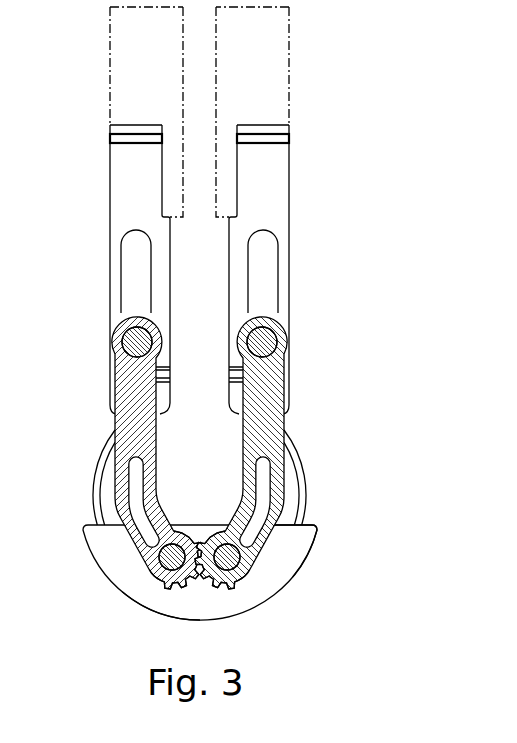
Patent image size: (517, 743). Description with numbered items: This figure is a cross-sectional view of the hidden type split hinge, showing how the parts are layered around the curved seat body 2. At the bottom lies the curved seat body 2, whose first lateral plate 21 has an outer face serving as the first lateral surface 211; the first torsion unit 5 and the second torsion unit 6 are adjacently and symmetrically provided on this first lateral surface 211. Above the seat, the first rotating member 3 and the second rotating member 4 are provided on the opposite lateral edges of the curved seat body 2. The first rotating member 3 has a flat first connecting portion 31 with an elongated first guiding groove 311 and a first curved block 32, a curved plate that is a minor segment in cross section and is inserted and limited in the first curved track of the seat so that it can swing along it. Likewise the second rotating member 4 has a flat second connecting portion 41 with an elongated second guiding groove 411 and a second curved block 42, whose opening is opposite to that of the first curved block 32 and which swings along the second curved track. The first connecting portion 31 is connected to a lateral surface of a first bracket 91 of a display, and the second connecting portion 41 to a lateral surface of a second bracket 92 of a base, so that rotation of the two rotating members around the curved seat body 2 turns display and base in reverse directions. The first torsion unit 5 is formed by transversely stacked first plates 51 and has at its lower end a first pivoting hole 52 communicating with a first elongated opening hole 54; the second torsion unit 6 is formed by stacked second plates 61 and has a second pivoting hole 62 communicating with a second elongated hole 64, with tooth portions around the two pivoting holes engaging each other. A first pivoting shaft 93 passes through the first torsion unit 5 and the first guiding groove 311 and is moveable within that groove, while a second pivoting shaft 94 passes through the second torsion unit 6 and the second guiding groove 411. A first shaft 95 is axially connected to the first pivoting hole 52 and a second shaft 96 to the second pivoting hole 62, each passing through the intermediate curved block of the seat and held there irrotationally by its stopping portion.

The curved seat body 2 is at (225, 620).
The first lateral plate 21 is at (152, 603).
The first lateral surface 211 is at (298, 545).
The first rotating member 3 is at (298, 170).
The first connecting portion 31 is at (275, 205).
The first guiding groove 311 is at (265, 268).
The first curved block 32 is at (298, 465).
The second rotating member 4 is at (100, 170).
The second connecting portion 41 is at (125, 205).
The second guiding groove 411 is at (133, 268).
The second curved block 42 is at (102, 465).
The first torsion unit 5 is at (278, 465).
The first plates 51 is at (279, 405).
The first pivoting hole 52 is at (258, 563).
The first elongated opening hole 54 is at (272, 488).
The second torsion unit 6 is at (121, 465).
The second plates 61 is at (120, 405).
The second pivoting hole 62 is at (140, 560).
The second elongated hole 64 is at (128, 488).
The first bracket 91 is at (274, 67).
The second bracket 92 is at (125, 67).
The first pivoting shaft 93 is at (283, 328).
The second pivoting shaft 94 is at (115, 328).
The first shaft 95 is at (240, 570).
The second shaft 96 is at (160, 570).